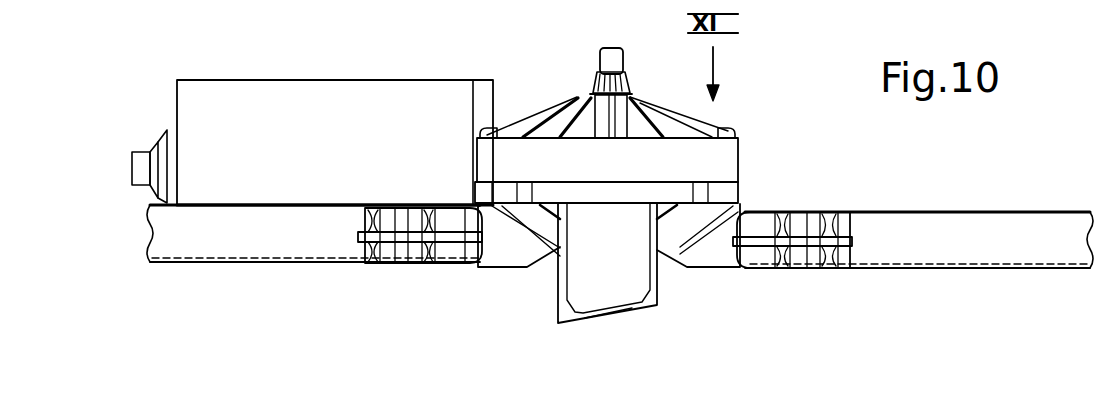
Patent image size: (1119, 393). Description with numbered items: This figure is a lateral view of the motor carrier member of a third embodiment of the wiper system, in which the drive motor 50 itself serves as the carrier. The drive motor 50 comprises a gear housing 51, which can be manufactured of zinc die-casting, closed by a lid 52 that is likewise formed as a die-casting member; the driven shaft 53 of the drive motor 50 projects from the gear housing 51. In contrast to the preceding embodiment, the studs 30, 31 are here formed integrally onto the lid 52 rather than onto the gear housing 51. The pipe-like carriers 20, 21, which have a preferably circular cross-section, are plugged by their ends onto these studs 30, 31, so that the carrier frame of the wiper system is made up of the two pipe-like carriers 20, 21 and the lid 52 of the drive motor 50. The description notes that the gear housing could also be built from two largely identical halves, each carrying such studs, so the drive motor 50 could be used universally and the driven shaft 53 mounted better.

The pipe-like carrier 20 is at (273, 248).
The pipe-like carrier 21 is at (955, 222).
The stud 30 is at (458, 253).
The stud 31 is at (755, 258).
The drive motor 50 is at (328, 172).
The gear housing 51 is at (723, 158).
The lid 52 is at (735, 193).
The driven shaft 53 is at (596, 75).